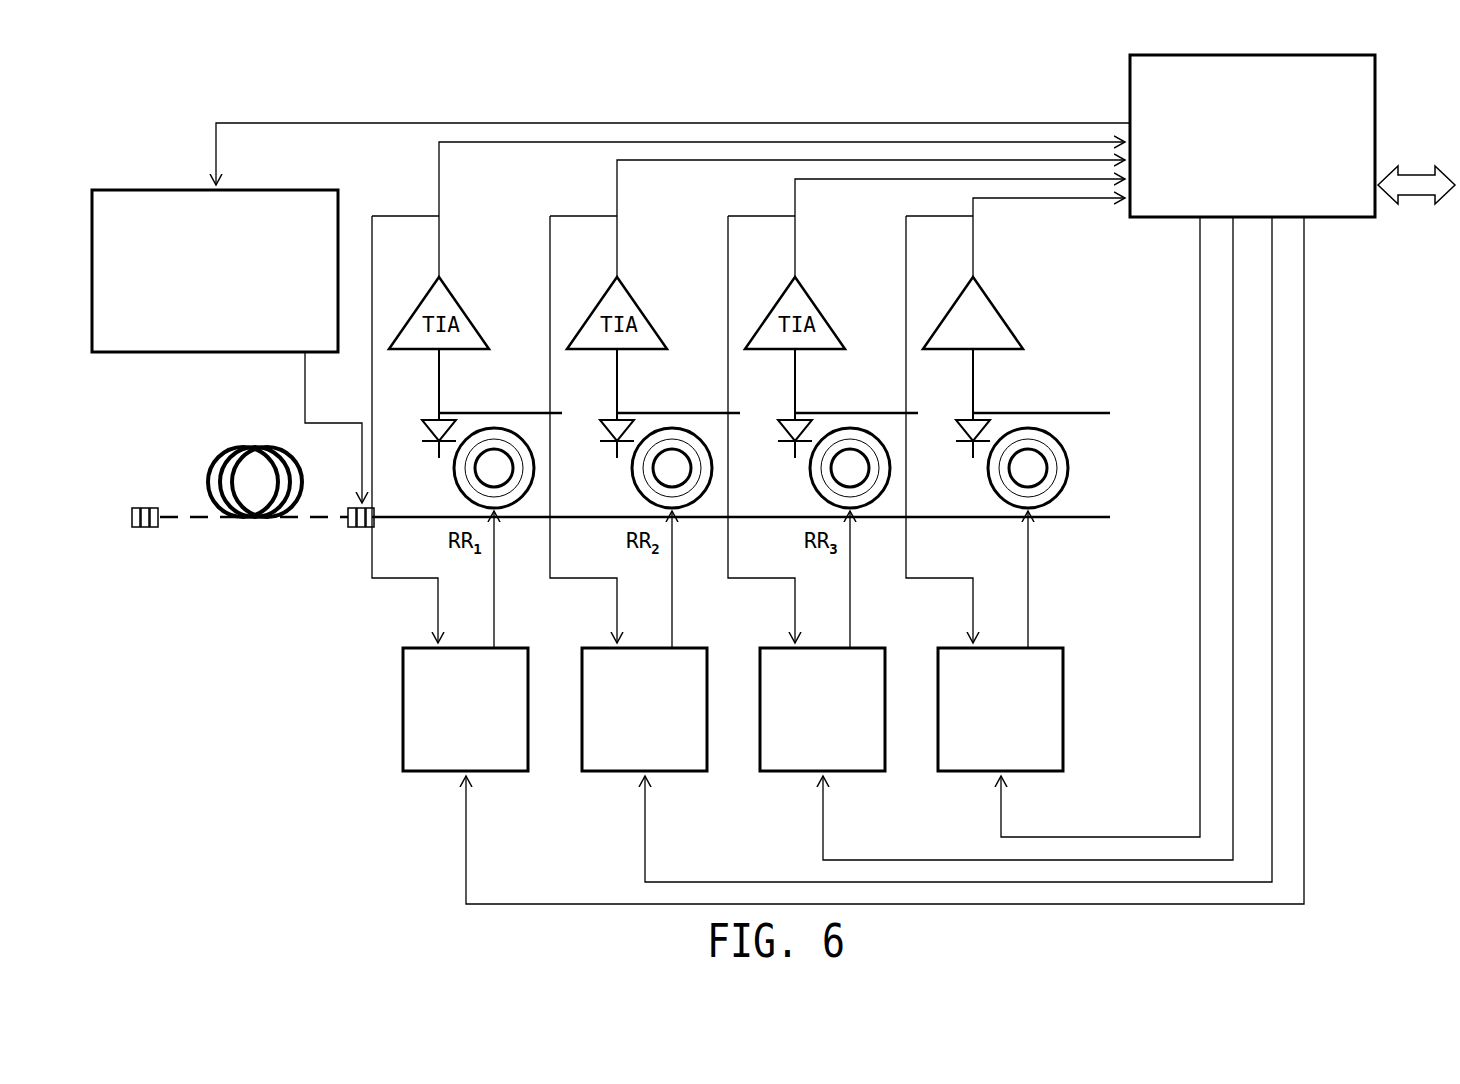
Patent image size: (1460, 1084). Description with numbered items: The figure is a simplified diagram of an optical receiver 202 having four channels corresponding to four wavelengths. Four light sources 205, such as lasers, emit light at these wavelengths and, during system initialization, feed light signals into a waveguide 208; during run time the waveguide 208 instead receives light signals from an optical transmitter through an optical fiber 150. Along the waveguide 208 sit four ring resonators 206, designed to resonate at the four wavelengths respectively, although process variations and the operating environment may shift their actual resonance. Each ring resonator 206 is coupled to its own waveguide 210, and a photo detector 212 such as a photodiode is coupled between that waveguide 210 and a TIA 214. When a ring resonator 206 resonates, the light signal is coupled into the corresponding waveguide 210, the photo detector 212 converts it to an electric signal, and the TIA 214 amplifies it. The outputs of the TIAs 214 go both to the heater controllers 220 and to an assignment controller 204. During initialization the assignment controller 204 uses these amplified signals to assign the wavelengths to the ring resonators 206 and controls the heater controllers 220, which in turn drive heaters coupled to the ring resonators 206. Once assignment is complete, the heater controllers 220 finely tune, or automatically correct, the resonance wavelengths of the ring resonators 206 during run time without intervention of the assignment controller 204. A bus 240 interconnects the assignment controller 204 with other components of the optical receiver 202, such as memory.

The optical receiver 202 is at (170, 113).
The assignment controller 204 is at (1377, 92).
The light sources 205 is at (152, 189).
The optical fiber 150 is at (200, 449).
The ring resonators 206 is at (1068, 468).
The waveguide 208 is at (1075, 520).
The waveguides 210 is at (1072, 413).
The photo detectors 212 is at (957, 442).
The TIAs 214 is at (997, 309).
The heater controllers 220 is at (505, 773).
The bus 240 is at (1413, 205).